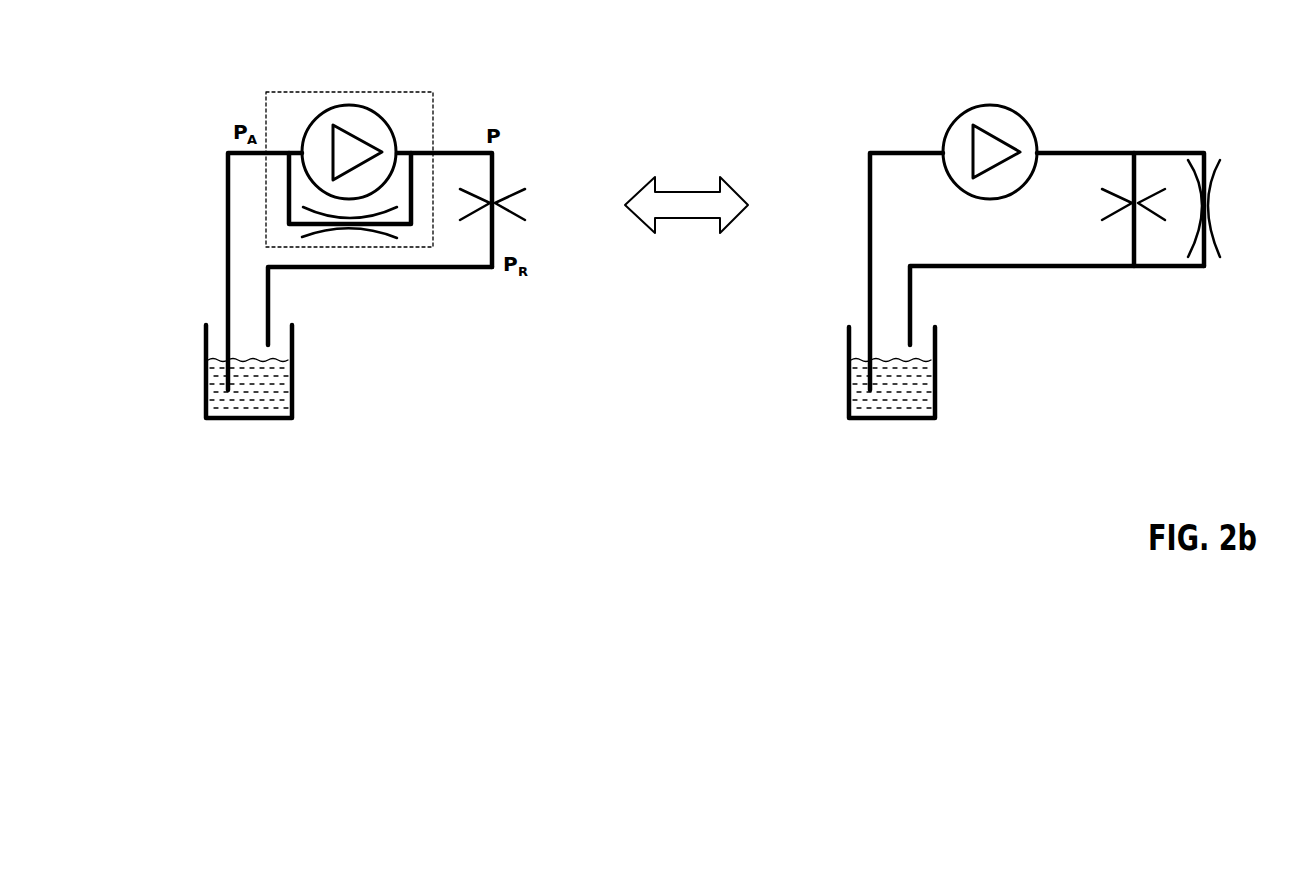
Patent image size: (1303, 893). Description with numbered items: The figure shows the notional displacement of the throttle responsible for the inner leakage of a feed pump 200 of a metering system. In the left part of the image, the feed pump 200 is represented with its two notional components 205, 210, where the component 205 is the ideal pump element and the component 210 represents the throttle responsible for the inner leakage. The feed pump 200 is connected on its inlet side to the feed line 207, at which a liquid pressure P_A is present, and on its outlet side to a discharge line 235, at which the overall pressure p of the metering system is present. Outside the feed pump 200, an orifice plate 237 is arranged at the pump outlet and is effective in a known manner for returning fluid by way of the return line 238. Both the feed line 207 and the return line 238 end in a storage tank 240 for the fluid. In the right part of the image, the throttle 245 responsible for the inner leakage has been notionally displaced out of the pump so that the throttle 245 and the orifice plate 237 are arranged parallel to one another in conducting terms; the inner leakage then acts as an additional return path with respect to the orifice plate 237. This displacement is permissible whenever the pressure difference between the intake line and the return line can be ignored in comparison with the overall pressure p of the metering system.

The feed pump 200 is at (350, 92).
The pump component 205 is at (310, 123).
The feed line 207 is at (226, 217).
The pump component 210 is at (292, 231).
The discharge line 235 is at (450, 150).
The orifice plate 237 is at (500, 193).
The return line 238 is at (383, 272).
The storage tank 240 is at (295, 377).
The throttle 245 is at (1213, 154).